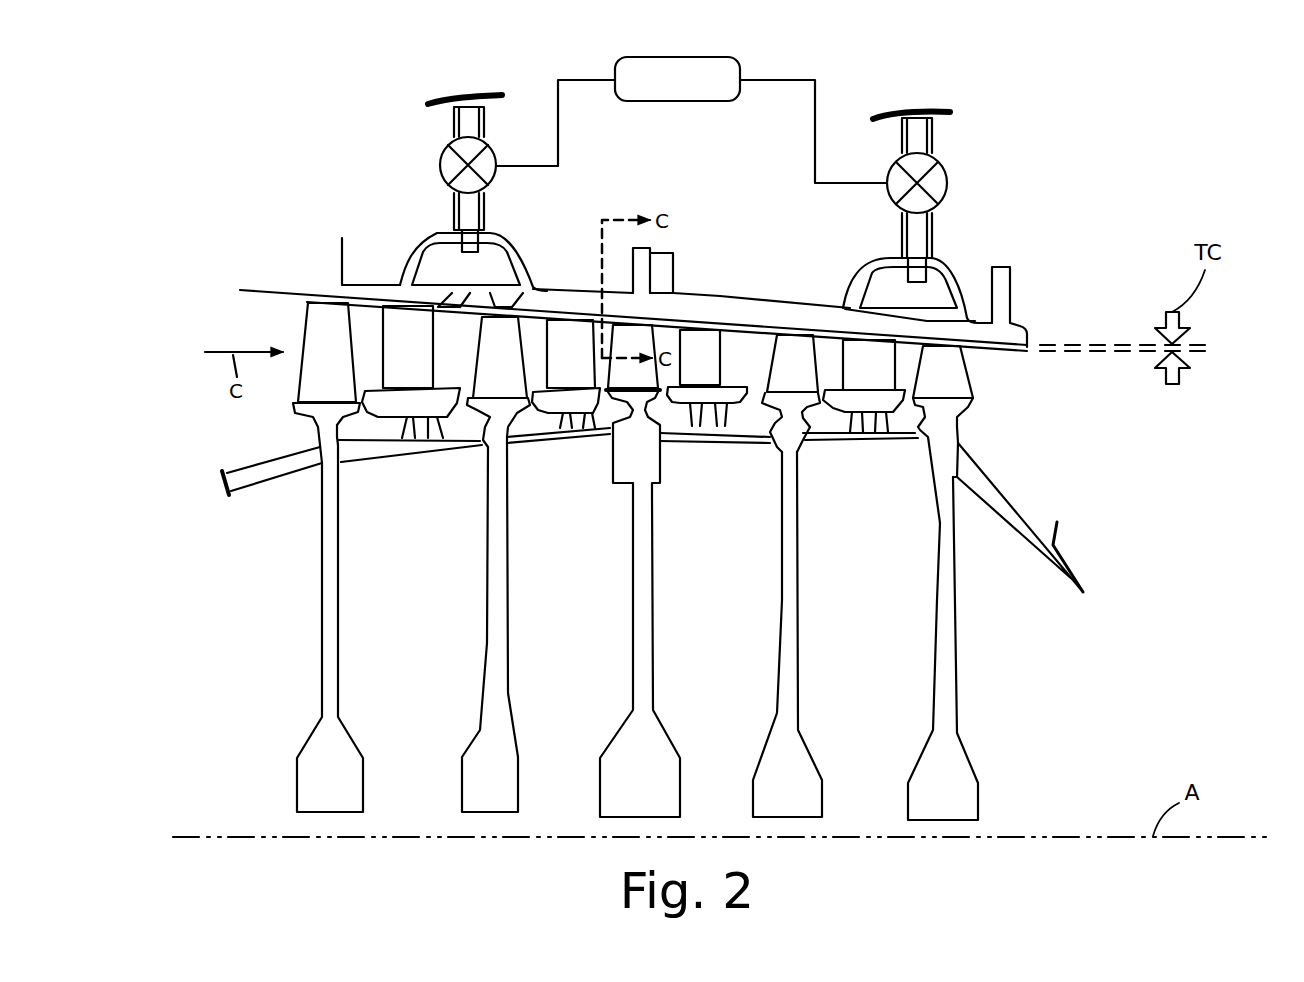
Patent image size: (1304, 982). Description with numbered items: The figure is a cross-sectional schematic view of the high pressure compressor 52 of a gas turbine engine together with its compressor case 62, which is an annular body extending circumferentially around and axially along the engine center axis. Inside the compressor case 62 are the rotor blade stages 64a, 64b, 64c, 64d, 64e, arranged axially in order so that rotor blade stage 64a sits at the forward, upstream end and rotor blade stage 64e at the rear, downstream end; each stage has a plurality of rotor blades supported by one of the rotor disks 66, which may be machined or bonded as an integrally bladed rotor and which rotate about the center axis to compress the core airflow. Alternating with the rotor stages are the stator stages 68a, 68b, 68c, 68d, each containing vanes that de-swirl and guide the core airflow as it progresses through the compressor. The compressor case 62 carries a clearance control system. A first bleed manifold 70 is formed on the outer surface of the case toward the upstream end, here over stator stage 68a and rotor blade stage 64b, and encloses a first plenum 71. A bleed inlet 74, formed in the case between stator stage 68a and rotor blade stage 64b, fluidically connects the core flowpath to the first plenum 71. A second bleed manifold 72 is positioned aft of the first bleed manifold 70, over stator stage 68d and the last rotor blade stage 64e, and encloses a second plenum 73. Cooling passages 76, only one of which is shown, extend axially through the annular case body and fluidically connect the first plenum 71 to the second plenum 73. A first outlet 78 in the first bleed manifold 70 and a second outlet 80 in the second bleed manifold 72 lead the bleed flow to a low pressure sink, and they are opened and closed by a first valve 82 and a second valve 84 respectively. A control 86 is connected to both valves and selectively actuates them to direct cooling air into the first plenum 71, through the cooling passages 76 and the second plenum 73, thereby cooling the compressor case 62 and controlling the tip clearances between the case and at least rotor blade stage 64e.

The high pressure compressor 52 is at (268, 270).
The compressor case 62 is at (567, 283).
The rotor blade stage 64a is at (308, 372).
The rotor blade stage 64b is at (480, 367).
The rotor blade stage 64c is at (613, 385).
The rotor blade stage 64d is at (772, 382).
The rotor blade stage 64e is at (920, 390).
The rotor disks 66 is at (655, 562).
The stator stage 68a is at (388, 369).
The stator stage 68b is at (550, 368).
The stator stage 68c is at (683, 372).
The stator stage 68d is at (848, 379).
The first bleed manifold 70 is at (410, 263).
The first plenum 71 is at (440, 278).
The second bleed manifold 72 is at (947, 270).
The second plenum 73 is at (886, 303).
The bleed inlet 74 is at (400, 293).
The cooling passages 76 is at (497, 293).
The first outlet 78 is at (447, 125).
The second outlet 80 is at (933, 143).
The first valve 82 is at (437, 163).
The second valve 84 is at (950, 183).
The control 86 is at (707, 60).